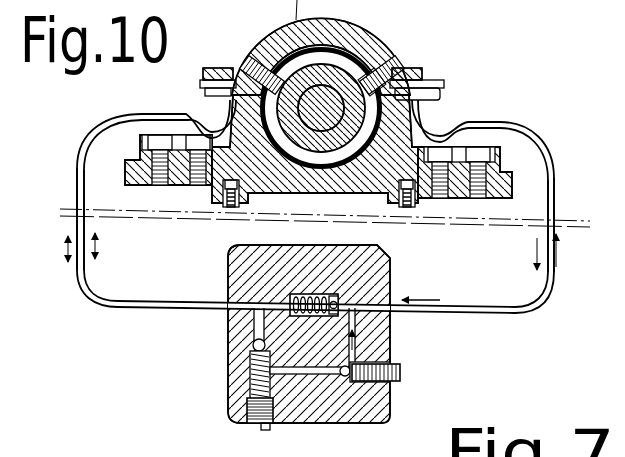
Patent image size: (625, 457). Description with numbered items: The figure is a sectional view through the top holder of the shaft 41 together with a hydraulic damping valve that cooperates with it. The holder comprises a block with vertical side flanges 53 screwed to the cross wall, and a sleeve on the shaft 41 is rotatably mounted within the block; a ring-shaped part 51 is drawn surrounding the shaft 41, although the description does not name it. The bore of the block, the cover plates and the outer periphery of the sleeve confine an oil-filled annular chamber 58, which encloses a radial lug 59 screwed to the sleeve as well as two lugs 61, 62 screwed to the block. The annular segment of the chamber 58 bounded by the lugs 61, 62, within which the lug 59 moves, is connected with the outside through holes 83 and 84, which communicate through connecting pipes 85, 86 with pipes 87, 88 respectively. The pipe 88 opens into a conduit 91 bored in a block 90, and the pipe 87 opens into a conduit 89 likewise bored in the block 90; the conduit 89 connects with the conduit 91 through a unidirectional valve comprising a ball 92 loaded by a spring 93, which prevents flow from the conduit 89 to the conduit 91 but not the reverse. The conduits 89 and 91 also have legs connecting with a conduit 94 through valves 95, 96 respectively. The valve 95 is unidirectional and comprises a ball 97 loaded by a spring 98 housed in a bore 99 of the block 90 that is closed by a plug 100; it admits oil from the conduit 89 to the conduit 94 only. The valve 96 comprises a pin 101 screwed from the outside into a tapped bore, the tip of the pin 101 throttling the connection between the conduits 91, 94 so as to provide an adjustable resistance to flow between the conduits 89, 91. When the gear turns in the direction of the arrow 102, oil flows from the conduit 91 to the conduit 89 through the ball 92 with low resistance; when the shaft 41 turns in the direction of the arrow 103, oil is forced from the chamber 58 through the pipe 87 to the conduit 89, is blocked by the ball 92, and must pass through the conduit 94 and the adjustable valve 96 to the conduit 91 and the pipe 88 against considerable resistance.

The shaft 41 is at (332, 97).
The bearing outer race 51 is at (323, 62).
The vertical side flanges 53 is at (510, 147).
The annular chamber 58 is at (328, 165).
The lug 59 is at (432, 112).
The lug 61 is at (278, 44).
The lug 62 is at (380, 57).
The hole 83 is at (248, 62).
The hole 84 is at (408, 77).
The connecting pipe 85 is at (213, 72).
The connecting pipe 86 is at (437, 80).
The pipe 87 is at (84, 202).
The pipe 88 is at (553, 180).
The conduit 89 is at (263, 303).
The block 90 is at (343, 258).
The conduit 91 is at (380, 331).
The ball 92 is at (338, 302).
The spring 93 is at (311, 296).
The conduit 94 is at (327, 370).
The valve 95 is at (240, 361).
The valve 96 is at (372, 392).
The ball 97 is at (254, 343).
The spring 98 is at (238, 385).
The bore 99 is at (232, 407).
The plug 100 is at (266, 430).
The pin 101 is at (402, 378).
The arrow 102 is at (97, 250).
The arrow 103 is at (64, 238).